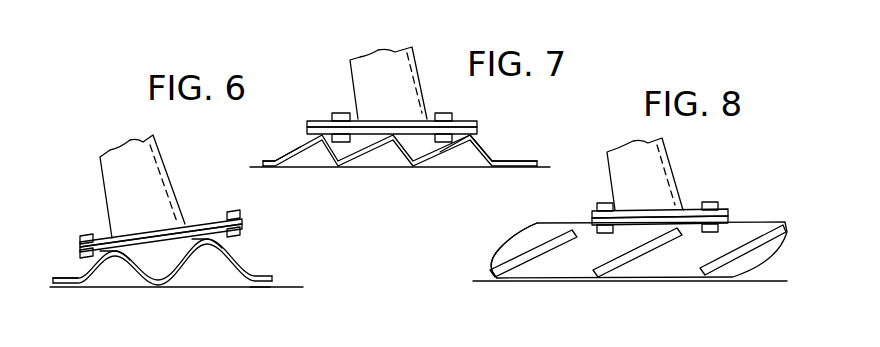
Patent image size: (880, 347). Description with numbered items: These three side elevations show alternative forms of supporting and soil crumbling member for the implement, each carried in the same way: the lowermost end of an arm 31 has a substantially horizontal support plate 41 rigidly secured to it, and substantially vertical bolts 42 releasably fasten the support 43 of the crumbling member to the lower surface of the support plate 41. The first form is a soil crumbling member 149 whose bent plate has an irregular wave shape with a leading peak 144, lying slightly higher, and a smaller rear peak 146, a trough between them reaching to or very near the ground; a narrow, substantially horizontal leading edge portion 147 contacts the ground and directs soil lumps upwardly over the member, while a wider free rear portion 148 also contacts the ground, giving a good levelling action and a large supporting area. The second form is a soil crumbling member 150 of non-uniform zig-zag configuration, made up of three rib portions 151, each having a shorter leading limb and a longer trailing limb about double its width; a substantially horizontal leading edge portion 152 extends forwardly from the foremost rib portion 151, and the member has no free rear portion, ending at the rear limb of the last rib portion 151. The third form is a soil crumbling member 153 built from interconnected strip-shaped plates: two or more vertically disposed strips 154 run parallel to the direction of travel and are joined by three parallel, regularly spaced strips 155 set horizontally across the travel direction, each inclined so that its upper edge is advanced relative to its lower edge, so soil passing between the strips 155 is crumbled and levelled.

In FIG. 6, the arm 31 is at (136, 168).
In FIG. 7, the arm 31 is at (388, 65).
In FIG. 8, the arm 31 is at (634, 161).
In FIG. 6, the support plate 41 is at (161, 210).
In FIG. 7, the support plate 41 is at (389, 103).
In FIG. 8, the support plate 41 is at (684, 196).
In FIG. 6, the bolts 42 is at (166, 216).
In FIG. 7, the bolts 42 is at (400, 108).
In FIG. 8, the bolts 42 is at (666, 198).
In FIG. 6, the support 43 is at (185, 234).
In FIG. 7, the support 43 is at (409, 114).
In FIG. 8, the support 43 is at (702, 206).
In FIG. 6, the leading peak 144 is at (208, 277).
In FIG. 6, the rear peak 146 is at (116, 284).
In FIG. 6, the leading edge portion 147 is at (182, 262).
In FIG. 6, the free rear portion 148 is at (55, 254).
In FIG. 6, the soil crumbling member 149 is at (289, 300).
In FIG. 7, the soil crumbling member 150 is at (400, 170).
In FIG. 7, the rib portions 151 is at (361, 164).
In FIG. 7, the leading edge portion 152 is at (522, 139).
In FIG. 8, the soil crumbling member 153 is at (639, 270).
In FIG. 8, the vertically disposed strips 154 is at (510, 243).
In FIG. 8, the strips 155 is at (638, 251).